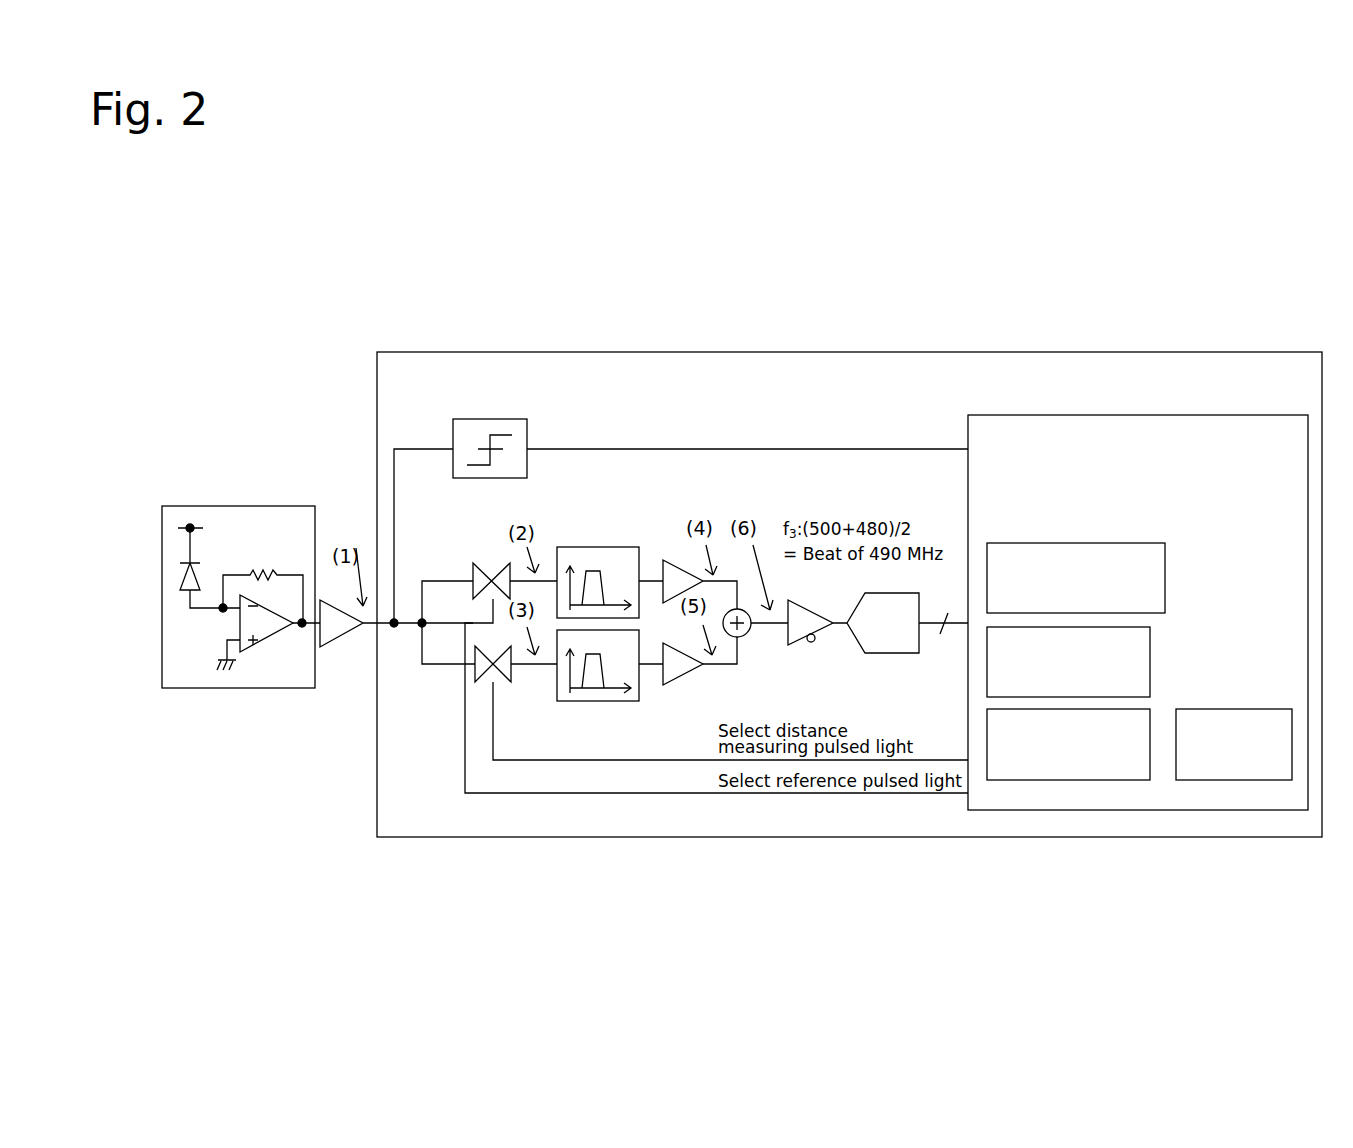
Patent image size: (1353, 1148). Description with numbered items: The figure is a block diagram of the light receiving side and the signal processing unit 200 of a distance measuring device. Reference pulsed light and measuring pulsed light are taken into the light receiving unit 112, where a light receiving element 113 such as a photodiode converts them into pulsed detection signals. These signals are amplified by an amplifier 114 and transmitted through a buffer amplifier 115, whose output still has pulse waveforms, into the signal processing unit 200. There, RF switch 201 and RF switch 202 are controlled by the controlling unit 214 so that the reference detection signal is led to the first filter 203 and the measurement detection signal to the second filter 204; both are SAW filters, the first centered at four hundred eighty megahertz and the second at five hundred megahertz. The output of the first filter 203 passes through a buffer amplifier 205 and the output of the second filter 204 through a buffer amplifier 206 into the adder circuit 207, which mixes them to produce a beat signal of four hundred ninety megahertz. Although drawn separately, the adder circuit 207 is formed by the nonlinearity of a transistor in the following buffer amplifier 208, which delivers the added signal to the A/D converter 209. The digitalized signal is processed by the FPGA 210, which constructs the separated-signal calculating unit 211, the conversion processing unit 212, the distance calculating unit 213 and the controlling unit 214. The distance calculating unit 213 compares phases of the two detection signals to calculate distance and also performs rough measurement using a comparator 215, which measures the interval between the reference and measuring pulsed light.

The light receiving unit 112 is at (190, 680).
The light receiving element 113 is at (180, 577).
The amplifier 114 is at (268, 638).
The buffer amplifier 115 is at (337, 645).
The signal processing unit 200 is at (377, 408).
The RF switch 201 is at (473, 572).
The RF switch 202 is at (480, 682).
The first filter 203 is at (640, 552).
The second filter 204 is at (639, 680).
The buffer amplifier 205 is at (666, 565).
The buffer amplifier 206 is at (682, 683).
The adder circuit 207 is at (748, 636).
The buffer amplifier 208 is at (803, 645).
The A/D converter 209 is at (888, 653).
The FPGA 210 is at (1233, 432).
The separated-signal calculating unit 211 is at (1023, 542).
The conversion processing unit 212 is at (1150, 658).
The distance calculating unit 213 is at (1055, 780).
The controlling unit 214 is at (1220, 780).
The comparator 215 is at (527, 440).